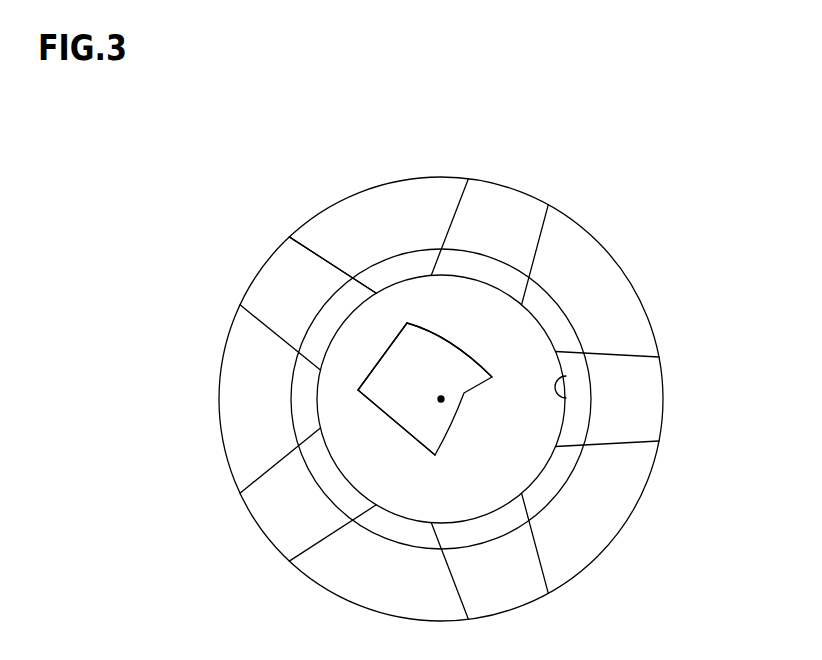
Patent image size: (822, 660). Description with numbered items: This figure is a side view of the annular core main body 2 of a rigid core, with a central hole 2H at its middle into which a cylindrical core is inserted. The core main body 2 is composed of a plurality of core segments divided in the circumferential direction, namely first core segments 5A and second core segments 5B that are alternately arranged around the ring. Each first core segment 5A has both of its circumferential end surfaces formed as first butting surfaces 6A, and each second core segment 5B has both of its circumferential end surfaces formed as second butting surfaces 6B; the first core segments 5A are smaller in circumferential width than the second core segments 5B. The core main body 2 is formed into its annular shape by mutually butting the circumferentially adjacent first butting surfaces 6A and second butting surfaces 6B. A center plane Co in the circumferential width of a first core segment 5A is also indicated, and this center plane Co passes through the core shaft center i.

The core main body 2 is at (661, 193).
The central hole 2H is at (567, 398).
The first core segment 5A is at (503, 213).
The second core segment 5B is at (380, 213).
The first butting surface 6A is at (449, 236).
The second butting surface 6B is at (340, 277).
The center plane Co is at (441, 399).
The core shaft center i is at (452, 393).